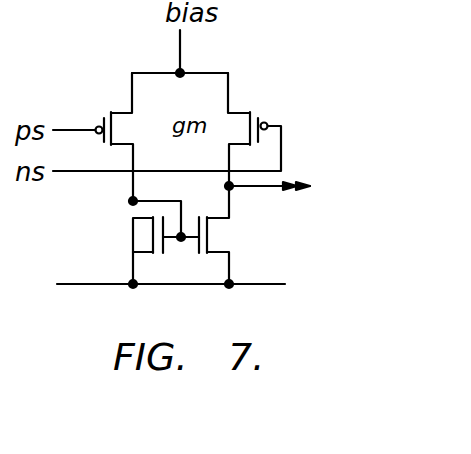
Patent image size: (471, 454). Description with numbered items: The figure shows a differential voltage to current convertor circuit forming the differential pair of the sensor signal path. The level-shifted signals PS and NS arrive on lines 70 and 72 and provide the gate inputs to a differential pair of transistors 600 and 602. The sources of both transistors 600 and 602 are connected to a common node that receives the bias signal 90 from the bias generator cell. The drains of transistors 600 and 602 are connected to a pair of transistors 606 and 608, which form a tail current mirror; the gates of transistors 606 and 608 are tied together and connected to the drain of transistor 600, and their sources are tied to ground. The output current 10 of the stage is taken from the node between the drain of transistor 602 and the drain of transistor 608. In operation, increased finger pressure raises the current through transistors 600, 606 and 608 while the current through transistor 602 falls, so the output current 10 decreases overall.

The bias signal 90 is at (180, 48).
The line carrying signal PS 70 is at (85, 128).
The line carrying signal NS 72 is at (87, 168).
The transistor 600 is at (118, 131).
The transistor 602 is at (246, 132).
The transistor 606 is at (152, 242).
The transistor 608 is at (208, 242).
The output current I0 10 is at (288, 193).